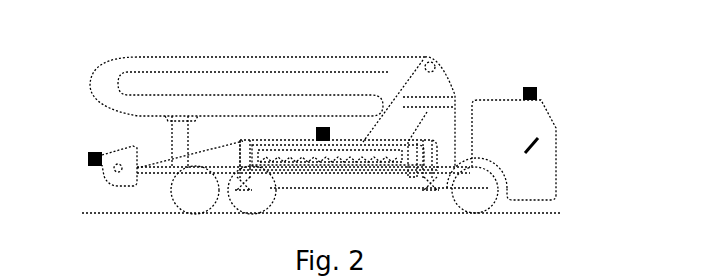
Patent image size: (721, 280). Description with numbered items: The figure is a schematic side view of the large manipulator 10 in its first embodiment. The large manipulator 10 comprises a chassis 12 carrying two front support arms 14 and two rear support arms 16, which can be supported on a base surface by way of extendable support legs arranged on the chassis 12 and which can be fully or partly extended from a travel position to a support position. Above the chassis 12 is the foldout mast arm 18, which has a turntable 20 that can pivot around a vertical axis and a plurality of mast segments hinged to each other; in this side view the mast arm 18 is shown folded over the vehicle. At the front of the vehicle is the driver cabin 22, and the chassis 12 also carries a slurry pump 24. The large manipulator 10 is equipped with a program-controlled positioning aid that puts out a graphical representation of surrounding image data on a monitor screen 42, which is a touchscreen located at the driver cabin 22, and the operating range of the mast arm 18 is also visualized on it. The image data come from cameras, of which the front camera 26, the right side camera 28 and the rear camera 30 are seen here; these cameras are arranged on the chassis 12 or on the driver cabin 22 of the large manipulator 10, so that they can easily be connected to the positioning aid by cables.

The large manipulator 10 is at (616, 107).
The chassis 12 is at (302, 165).
The front support arms 14 is at (430, 177).
The rear support arms 16 is at (233, 190).
The mast arm 18 is at (392, 67).
The turntable 20 is at (450, 88).
The driver cabin 22 is at (557, 180).
The slurry pump 24 is at (120, 180).
The front camera 26 is at (540, 90).
The right side camera 28 is at (324, 127).
The rear camera 30 is at (88, 165).
The monitor screen 42 is at (537, 145).